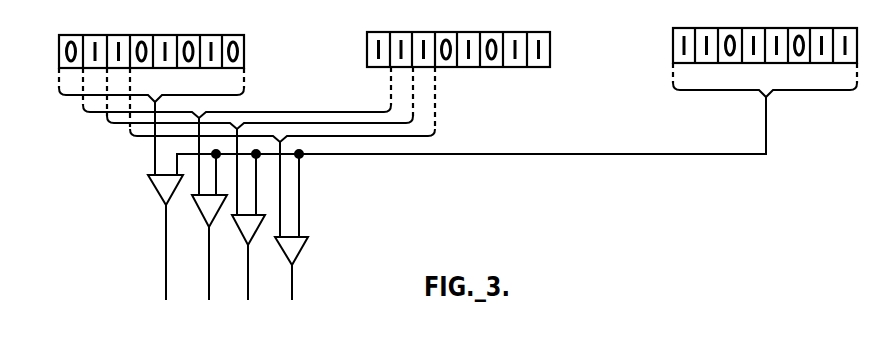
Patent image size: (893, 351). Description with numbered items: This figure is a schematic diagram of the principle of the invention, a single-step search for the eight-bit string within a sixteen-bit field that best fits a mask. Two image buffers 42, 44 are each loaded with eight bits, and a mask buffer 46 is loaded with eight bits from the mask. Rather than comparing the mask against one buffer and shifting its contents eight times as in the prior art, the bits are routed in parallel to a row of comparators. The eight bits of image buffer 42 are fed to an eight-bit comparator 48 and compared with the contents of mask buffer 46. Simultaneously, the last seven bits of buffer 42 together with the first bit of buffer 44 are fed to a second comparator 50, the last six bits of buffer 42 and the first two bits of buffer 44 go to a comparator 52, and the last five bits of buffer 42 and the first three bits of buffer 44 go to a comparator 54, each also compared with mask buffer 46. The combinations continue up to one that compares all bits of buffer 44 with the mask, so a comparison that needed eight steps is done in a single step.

The image buffer 42 is at (197, 34).
The image buffer 44 is at (500, 32).
The mask buffer 46 is at (806, 28).
The eight-bit comparator 48 is at (159, 190).
The second comparator 50 is at (207, 216).
The comparator 52 is at (246, 237).
The comparator 54 is at (289, 257).